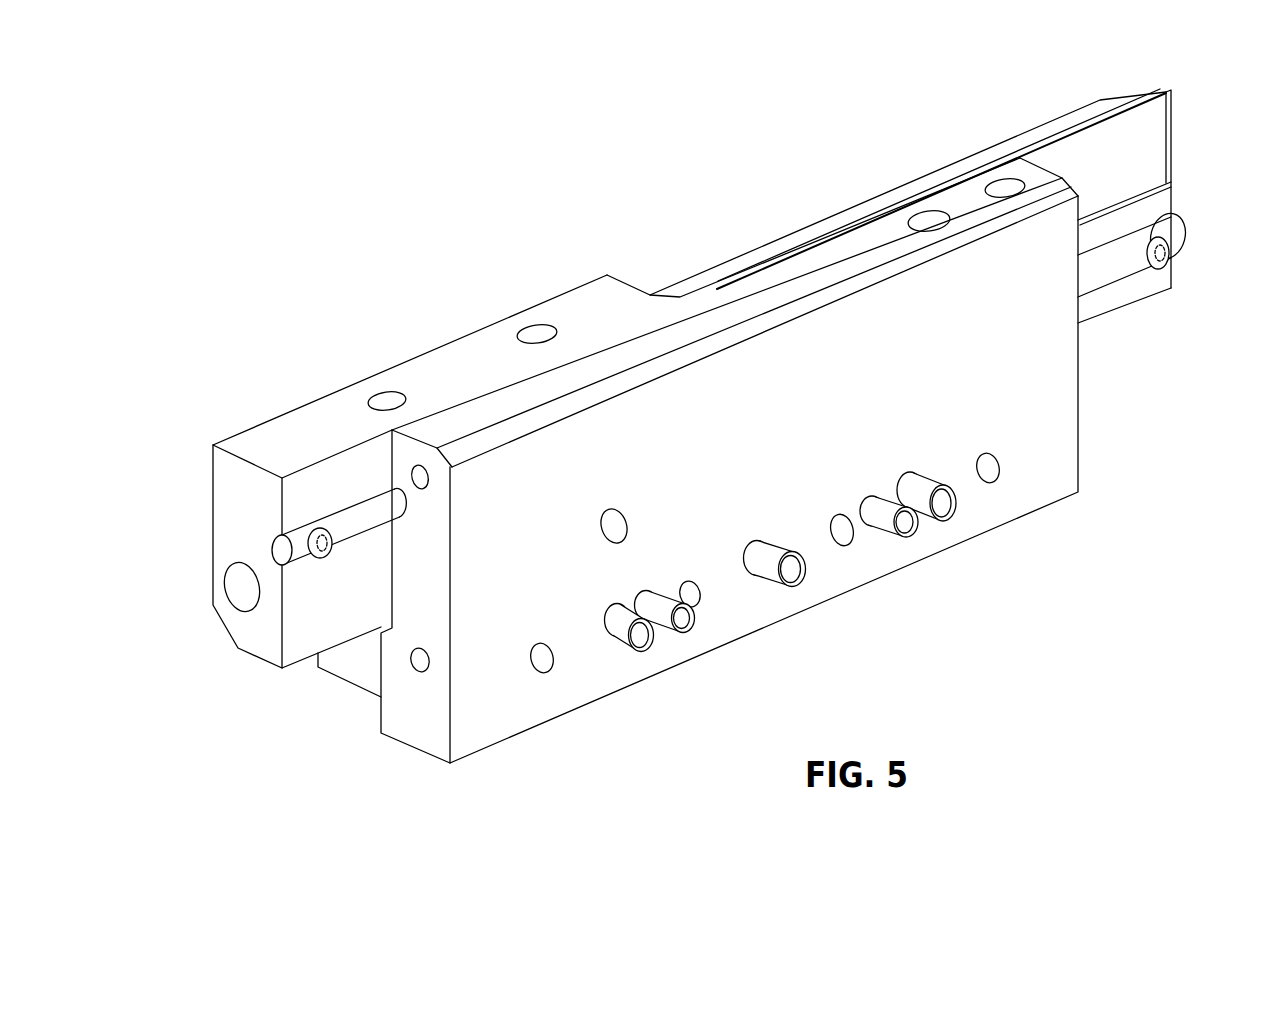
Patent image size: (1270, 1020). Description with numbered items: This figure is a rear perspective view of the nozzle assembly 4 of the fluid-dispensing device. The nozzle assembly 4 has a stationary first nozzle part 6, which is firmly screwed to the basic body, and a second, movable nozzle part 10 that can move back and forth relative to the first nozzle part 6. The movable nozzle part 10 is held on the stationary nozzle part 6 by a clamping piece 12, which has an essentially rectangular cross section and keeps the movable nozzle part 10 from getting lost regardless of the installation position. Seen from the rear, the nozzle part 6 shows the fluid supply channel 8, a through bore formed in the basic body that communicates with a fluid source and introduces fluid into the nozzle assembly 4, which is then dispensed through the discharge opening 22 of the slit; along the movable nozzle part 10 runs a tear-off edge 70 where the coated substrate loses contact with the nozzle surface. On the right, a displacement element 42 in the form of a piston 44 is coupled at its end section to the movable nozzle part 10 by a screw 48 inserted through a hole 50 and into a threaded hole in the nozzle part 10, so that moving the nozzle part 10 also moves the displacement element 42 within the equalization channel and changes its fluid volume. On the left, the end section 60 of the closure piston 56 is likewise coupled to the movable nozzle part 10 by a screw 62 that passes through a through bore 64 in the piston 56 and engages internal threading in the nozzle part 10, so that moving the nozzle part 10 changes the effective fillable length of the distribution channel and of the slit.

The nozzle assembly 4 is at (1077, 580).
The first nozzle part 6 is at (1065, 444).
The fluid supply channel 8 is at (610, 530).
The movable nozzle part 10 is at (1162, 122).
The clamping piece 12 is at (346, 672).
The discharge opening 22 is at (817, 243).
The displacement element 42 is at (1182, 242).
The piston 44 is at (1105, 276).
The screw 48 is at (1170, 267).
The hole 50 is at (1170, 210).
The piston 56 is at (365, 510).
The end section 60 is at (217, 490).
The screw 62 is at (323, 560).
The through bore 64 is at (308, 544).
The tear-off edge 70 is at (863, 222).